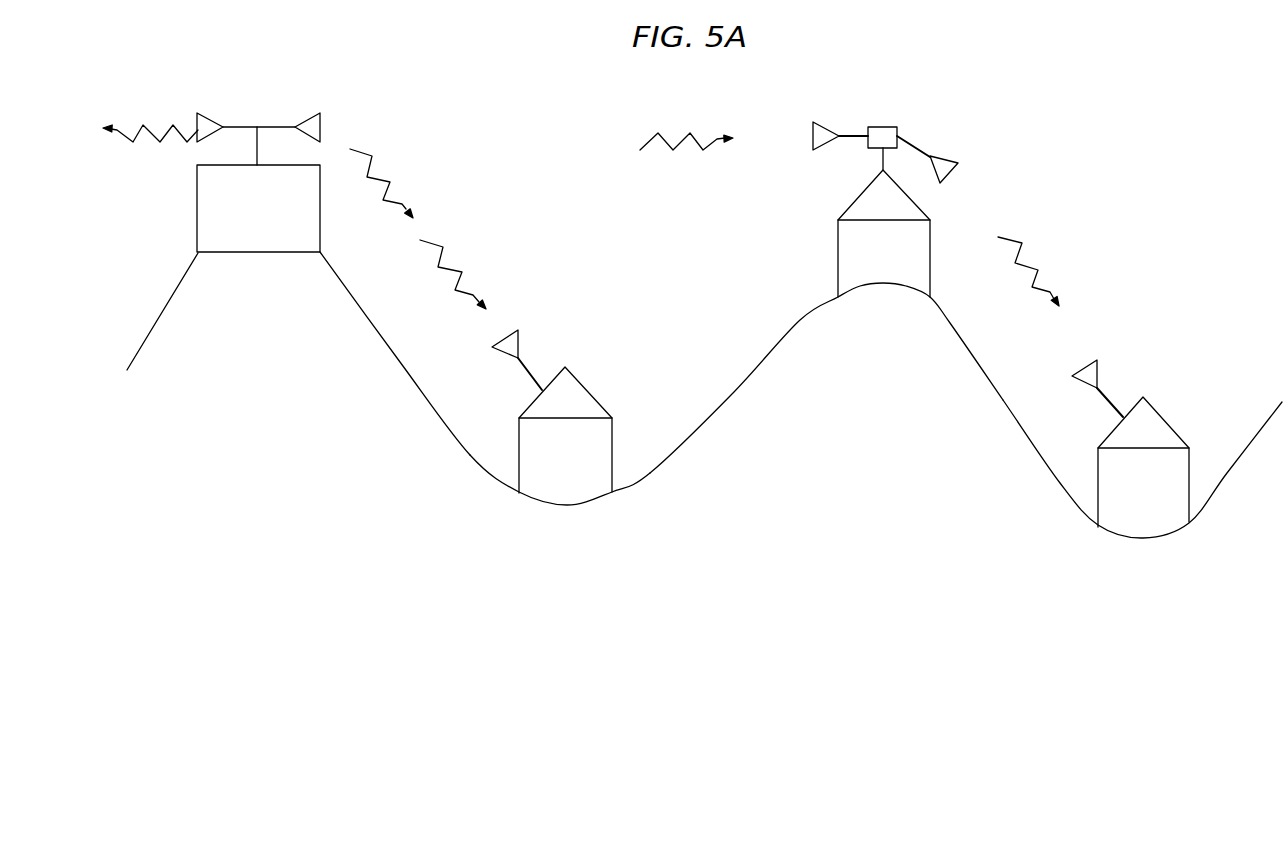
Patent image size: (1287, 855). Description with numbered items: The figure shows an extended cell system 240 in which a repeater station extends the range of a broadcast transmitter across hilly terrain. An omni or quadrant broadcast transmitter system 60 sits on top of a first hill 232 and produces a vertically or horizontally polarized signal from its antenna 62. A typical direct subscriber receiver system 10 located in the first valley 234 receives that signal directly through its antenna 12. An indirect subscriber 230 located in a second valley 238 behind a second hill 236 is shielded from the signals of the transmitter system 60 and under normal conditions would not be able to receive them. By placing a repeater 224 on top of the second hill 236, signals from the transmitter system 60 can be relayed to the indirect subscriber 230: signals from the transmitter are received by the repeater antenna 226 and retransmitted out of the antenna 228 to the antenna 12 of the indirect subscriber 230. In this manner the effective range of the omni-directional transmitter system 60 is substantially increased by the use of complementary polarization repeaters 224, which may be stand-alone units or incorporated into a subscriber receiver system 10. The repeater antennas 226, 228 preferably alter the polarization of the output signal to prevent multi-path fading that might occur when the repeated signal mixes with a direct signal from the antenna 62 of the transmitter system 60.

The omni or quadrant broadcast transmitter system 60 is at (215, 146).
The antenna 62 is at (213, 113).
The extended cell system 240 is at (533, 145).
The first hill 232 is at (354, 310).
The direct subscriber receiver system 10 is at (568, 399).
The antenna 12 is at (517, 340).
The first valley 234 is at (618, 492).
The repeater 224 is at (898, 180).
The repeater antenna 226 is at (827, 127).
The antenna 228 is at (948, 157).
The second hill 236 is at (951, 328).
The indirect subscriber 230 is at (1147, 431).
The second valley 238 is at (1205, 517).